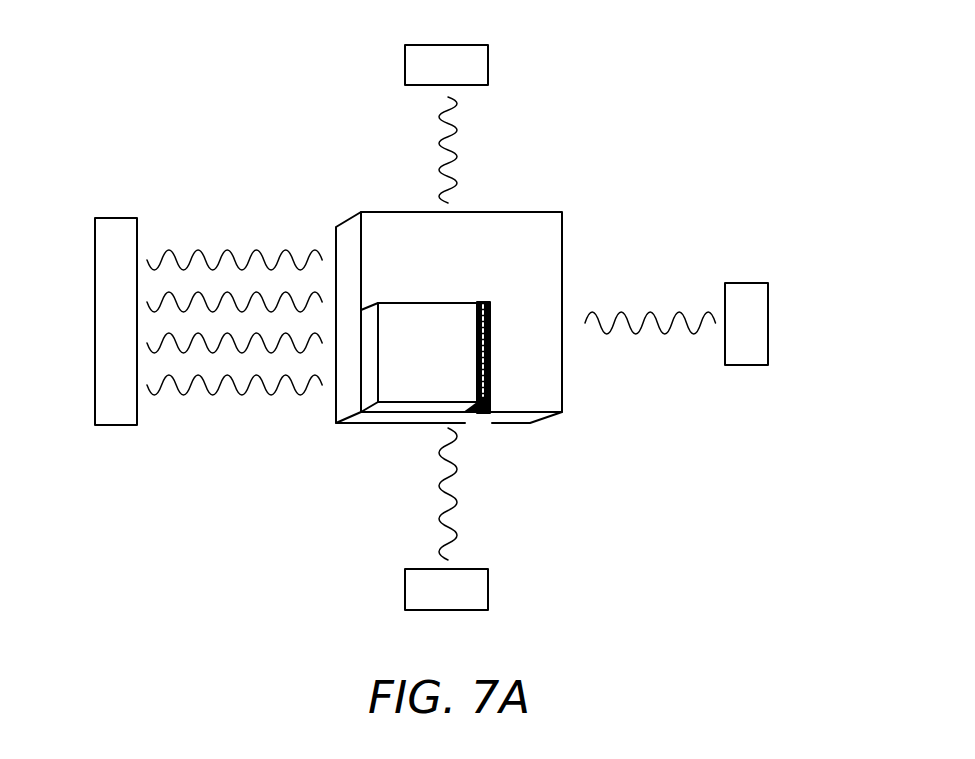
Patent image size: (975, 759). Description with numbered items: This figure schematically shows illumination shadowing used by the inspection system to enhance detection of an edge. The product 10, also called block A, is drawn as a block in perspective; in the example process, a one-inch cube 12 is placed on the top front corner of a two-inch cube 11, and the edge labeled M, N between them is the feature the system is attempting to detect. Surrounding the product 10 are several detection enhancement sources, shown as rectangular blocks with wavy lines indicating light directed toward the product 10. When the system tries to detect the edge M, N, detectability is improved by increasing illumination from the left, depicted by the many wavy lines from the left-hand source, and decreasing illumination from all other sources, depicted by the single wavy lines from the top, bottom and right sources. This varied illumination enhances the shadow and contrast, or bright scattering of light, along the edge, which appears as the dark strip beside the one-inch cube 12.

The product 10 is at (537, 211).
The two-inch cube 11 is at (543, 382).
The one-inch cube 12 is at (410, 390).